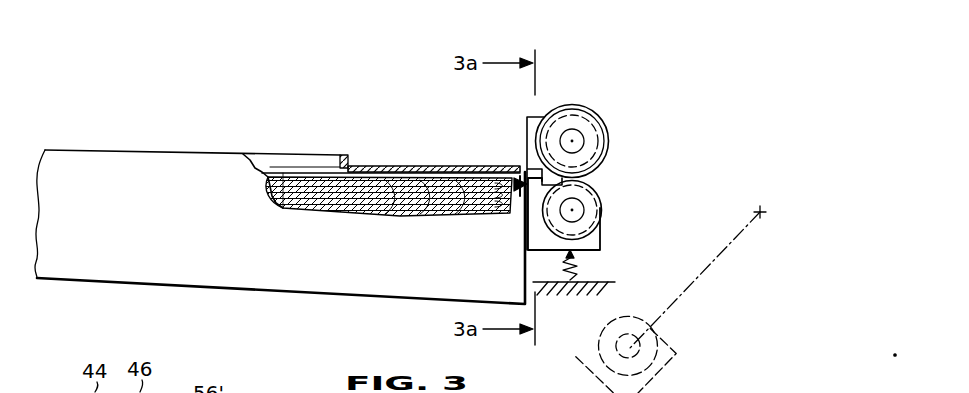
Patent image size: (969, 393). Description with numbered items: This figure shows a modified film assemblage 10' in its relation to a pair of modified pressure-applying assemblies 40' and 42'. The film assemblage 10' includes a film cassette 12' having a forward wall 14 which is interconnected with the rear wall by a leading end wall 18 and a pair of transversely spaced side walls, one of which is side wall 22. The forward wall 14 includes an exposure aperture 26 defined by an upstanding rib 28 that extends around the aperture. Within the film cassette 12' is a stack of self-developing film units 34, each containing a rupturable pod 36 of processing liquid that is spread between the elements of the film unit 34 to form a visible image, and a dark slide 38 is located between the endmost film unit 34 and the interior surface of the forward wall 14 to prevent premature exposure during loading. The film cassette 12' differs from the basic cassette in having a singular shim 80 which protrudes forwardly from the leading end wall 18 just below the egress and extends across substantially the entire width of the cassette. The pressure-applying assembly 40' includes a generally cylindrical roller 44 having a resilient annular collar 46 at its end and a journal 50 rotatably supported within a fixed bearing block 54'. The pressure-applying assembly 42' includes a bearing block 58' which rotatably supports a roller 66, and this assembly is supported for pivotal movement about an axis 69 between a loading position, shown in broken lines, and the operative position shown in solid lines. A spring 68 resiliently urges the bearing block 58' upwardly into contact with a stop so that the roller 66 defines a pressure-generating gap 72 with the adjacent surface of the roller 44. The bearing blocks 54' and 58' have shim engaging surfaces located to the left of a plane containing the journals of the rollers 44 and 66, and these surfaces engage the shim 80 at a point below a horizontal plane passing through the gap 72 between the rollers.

The film assemblage 10' is at (131, 58).
The film cassette 12' is at (243, 109).
The forward wall 14 is at (458, 166).
The leading end wall 18 is at (574, 309).
The side wall 22 is at (171, 224).
The exposure aperture 26 is at (326, 157).
The upstanding rib 28 is at (344, 165).
The film unit 34 is at (340, 208).
The pod 36 is at (424, 219).
The dark slide 38 is at (283, 172).
The pressure-applying assembly 40' is at (651, 132).
The pressure-applying assembly 42' is at (643, 295).
The roller 44 is at (588, 112).
The annular collar 46 is at (574, 107).
The journal 50 is at (584, 137).
The bearing block 54' is at (523, 166).
The bearing block 58' is at (591, 220).
The roller 66 is at (603, 193).
The spring 68 is at (578, 268).
The axis 69 is at (762, 215).
The pressure-generating gap 72 is at (604, 176).
The shim 80 is at (520, 194).